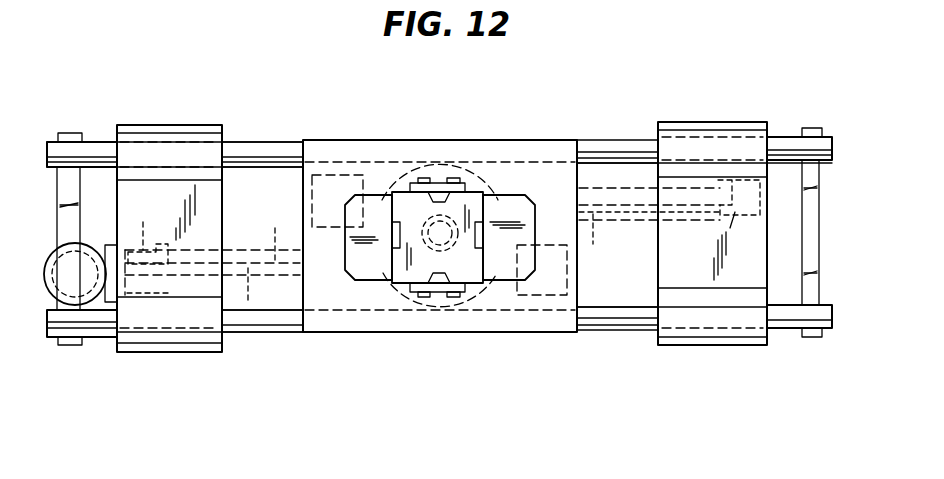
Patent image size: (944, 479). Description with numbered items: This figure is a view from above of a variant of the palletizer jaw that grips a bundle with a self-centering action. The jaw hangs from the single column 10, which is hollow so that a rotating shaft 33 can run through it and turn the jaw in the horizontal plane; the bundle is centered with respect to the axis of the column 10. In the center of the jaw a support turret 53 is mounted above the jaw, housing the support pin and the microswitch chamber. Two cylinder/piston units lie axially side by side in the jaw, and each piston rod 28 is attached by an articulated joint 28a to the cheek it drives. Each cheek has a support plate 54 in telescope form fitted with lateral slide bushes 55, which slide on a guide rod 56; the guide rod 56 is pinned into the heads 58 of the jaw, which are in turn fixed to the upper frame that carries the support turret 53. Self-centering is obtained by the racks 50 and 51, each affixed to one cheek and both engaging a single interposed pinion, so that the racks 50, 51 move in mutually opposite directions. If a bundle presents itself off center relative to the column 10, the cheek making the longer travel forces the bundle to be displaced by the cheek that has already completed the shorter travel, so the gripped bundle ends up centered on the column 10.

The column 10 is at (389, 200).
The piston rod 28 is at (640, 175).
The articulated joint 28a is at (442, 222).
The rotating shaft 33 is at (440, 236).
The rack 50 is at (244, 237).
The rack 51 is at (618, 241).
The support turret 53 is at (528, 188).
The support plate 54 is at (200, 205).
The slide bush 55 is at (152, 115).
The guide rod 56 is at (250, 142).
The heads of the jaw 58 is at (71, 346).